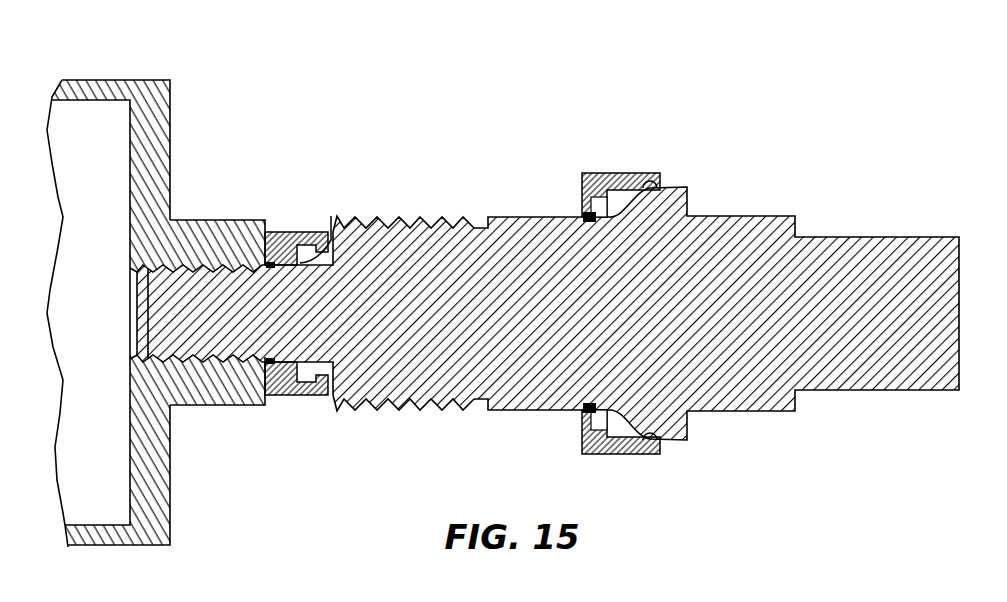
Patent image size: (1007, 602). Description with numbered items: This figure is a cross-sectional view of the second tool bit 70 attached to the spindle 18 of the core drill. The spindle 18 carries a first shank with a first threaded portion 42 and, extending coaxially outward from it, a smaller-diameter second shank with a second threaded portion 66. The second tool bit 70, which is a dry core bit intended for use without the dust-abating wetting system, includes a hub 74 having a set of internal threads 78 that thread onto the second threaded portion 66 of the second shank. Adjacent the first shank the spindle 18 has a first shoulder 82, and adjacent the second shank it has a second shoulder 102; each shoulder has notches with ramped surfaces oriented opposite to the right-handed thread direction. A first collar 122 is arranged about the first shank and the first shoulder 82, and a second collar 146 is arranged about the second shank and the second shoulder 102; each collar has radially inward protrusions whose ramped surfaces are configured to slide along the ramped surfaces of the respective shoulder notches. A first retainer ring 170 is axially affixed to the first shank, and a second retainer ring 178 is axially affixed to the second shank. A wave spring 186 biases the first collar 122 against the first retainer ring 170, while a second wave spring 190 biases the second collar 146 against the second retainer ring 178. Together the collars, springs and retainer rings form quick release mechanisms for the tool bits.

The spindle 18 is at (752, 216).
The first threaded portion 42 is at (412, 215).
The second threaded portion 66 is at (203, 250).
The second tool bit 70 is at (115, 80).
The hub 74 is at (230, 220).
The internal threads 78 is at (198, 352).
The first shoulder 82 is at (626, 452).
The second shoulder 102 is at (303, 385).
The first collar 122 is at (603, 173).
The second collar 146 is at (293, 232).
The first retainer ring 170 is at (583, 213).
The second retainer ring 178 is at (269, 366).
The wave spring 186 is at (670, 187).
The wave spring 190 is at (333, 237).